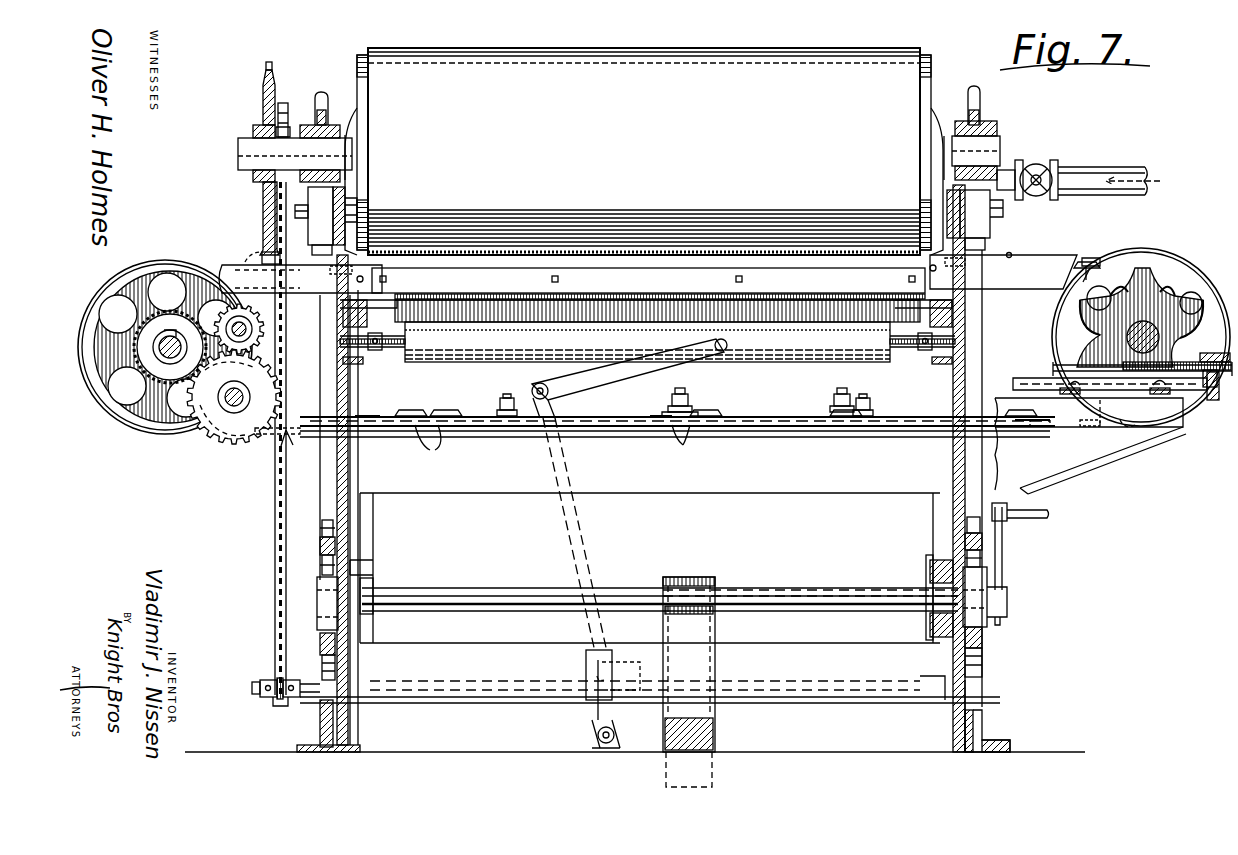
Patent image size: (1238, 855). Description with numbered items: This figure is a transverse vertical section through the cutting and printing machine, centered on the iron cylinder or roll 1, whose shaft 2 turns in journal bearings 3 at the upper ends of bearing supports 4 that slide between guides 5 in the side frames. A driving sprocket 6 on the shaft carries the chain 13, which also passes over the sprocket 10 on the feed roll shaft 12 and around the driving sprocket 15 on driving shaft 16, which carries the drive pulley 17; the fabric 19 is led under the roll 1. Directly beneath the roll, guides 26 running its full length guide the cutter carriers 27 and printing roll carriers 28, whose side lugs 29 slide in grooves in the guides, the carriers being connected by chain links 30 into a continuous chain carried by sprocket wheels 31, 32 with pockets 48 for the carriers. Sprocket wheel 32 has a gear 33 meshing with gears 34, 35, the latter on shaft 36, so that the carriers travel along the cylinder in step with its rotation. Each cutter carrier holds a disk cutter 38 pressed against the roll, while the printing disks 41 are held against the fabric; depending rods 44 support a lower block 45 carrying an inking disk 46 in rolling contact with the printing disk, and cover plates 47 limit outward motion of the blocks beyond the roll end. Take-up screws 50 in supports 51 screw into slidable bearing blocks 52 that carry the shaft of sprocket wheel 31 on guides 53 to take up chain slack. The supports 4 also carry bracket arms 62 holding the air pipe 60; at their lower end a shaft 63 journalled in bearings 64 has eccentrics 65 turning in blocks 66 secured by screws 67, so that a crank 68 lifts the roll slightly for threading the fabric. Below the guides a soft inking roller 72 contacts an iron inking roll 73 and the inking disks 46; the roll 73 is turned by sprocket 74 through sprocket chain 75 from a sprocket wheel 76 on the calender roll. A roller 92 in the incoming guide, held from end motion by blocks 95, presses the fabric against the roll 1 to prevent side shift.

The iron cylinder or roll 1 is at (633, 99).
The shaft 2 is at (240, 151).
The journal bearings 3 is at (346, 176).
The bearing supports 4 is at (320, 513).
The guides 5 is at (372, 542).
The driving sprocket 6 is at (267, 70).
The sprocket 10 is at (262, 256).
The shaft 12 is at (242, 260).
The chain 13 is at (268, 240).
The driving sprocket 15 is at (264, 682).
The driving shaft 16 is at (255, 692).
The drive pulley 17 is at (716, 724).
The fabric 19 is at (486, 252).
The guides 26 is at (648, 274).
The cutter carriers 27 is at (268, 440).
The printing roll carriers 28 is at (362, 426).
The side lugs 29 is at (286, 434).
The chain links 30 is at (225, 268).
The sprocket wheel 31 is at (1185, 262).
The sprocket wheel 32 is at (165, 268).
The gear 33 is at (636, 347).
The gear 34 is at (240, 412).
The gear 35 is at (225, 316).
The shaft 36 is at (234, 387).
The disk cutter 38 is at (1100, 262).
The printing disks 41 is at (1010, 254).
The depending rods 44 is at (502, 406).
The lower block 45 is at (690, 408).
The inking disk 46 is at (680, 394).
The cover plates 47 is at (416, 412).
The pockets 48 is at (132, 318).
The take-up screws 50 is at (1190, 355).
The supports 51 is at (1216, 400).
The slidable bearing blocks 52 is at (1152, 324).
The guides 53 is at (1110, 390).
The air pipe 60 is at (1005, 172).
The bracket arms 62 is at (322, 96).
The shaft 63 is at (772, 590).
The bearings 64 is at (373, 598).
The eccentrics 65 is at (320, 596).
The blocks 66 is at (320, 636).
The screws 67 is at (324, 532).
The crank 68 is at (1003, 560).
The inking roller 72 is at (590, 305).
The iron inking roll 73 is at (647, 342).
The sprocket 74 is at (292, 352).
The sprocket chain 75 is at (316, 204).
The sprocket wheel 76 is at (284, 128).
The roller 92 is at (441, 262).
The blocks 95 is at (348, 268).